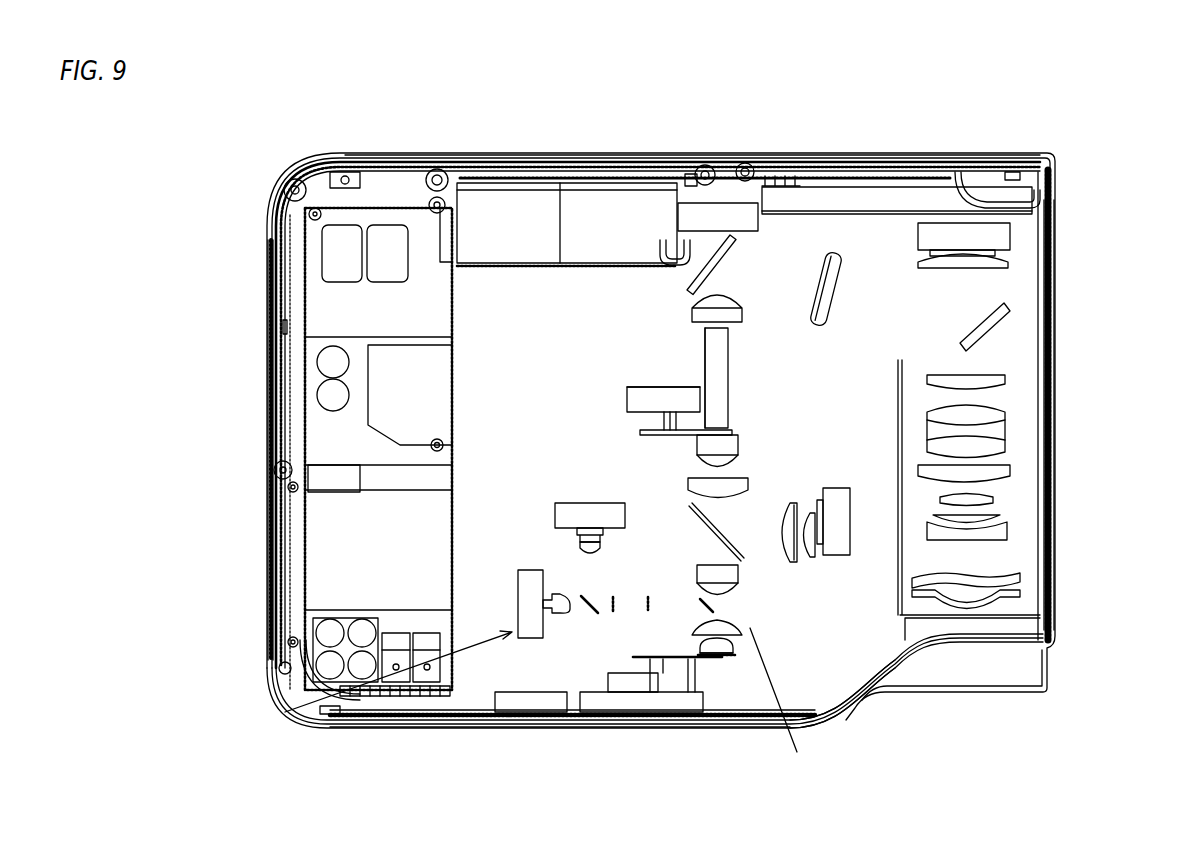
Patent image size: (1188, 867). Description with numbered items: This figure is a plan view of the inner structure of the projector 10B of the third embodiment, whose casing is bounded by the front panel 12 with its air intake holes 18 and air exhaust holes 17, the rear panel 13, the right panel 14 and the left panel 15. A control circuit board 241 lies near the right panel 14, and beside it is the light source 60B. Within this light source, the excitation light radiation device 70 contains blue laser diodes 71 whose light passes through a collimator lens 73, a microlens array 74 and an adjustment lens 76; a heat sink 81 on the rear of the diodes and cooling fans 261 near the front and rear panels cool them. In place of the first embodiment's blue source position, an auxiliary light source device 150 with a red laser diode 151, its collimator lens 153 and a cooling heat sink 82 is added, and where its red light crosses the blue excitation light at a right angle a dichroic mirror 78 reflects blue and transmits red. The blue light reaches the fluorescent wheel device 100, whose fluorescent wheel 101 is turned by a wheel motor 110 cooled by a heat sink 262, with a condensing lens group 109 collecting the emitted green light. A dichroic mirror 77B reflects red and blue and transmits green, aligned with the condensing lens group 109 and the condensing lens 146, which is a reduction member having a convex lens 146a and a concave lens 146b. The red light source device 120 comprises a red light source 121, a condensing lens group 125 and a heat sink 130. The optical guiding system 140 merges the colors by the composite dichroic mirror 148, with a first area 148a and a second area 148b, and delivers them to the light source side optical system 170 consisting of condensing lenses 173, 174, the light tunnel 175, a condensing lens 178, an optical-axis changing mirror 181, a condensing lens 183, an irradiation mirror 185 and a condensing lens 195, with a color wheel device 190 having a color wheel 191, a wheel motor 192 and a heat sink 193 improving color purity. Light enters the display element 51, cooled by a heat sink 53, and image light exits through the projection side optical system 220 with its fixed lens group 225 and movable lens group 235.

The projector 10B is at (1063, 139).
The front panel 12 is at (352, 730).
The rear panel 13 is at (552, 163).
The right panel 14 is at (268, 328).
The left panel 15 is at (1053, 578).
The air exhaust holes 17 is at (268, 360).
The air intake holes 18 is at (518, 158).
The display element 51 is at (995, 250).
The heat sink 53 is at (931, 195).
The light source 60B is at (527, 405).
The excitation light radiation device 70 is at (470, 497).
The blue laser diodes 71 is at (580, 537).
The collimator lens 73 is at (586, 543).
The microlens array 74 is at (612, 613).
The adjustment lens 76 is at (648, 597).
The dichroic mirror 77B is at (694, 613).
The dichroic mirror 78 is at (590, 610).
The heat sink 81 is at (590, 512).
The heat sink 82 is at (465, 620).
The fluorescent wheel device 100 is at (708, 672).
The fluorescent wheel 101 is at (650, 665).
The condensing lens group 109 is at (732, 665).
The wheel motor 110 is at (678, 673).
The red light source device 120 is at (832, 570).
The red light source 121 is at (828, 520).
The condensing lens group 125 is at (811, 570).
The heat sink 130 is at (843, 545).
The optical guiding system 140 is at (750, 628).
The condensing lens 146 is at (705, 572).
The convex lens 146a is at (727, 590).
The concave lens 146b is at (730, 568).
The composite dichroic mirror 148 is at (740, 553).
The first area 148a is at (718, 530).
The second area 148b is at (684, 498).
The auxiliary light source device 150 is at (320, 713).
The red laser diode 151 is at (528, 603).
The collimator lens 153 is at (558, 612).
The light source side optical system 170 is at (735, 240).
The condensing lens 173 is at (745, 482).
The condensing lens 174 is at (730, 447).
The light tunnel 175 is at (722, 380).
The condensing lens 178 is at (700, 315).
The optical-axis changing mirror 181 is at (700, 292).
The condensing lens 183 is at (835, 285).
The irradiation mirror 185 is at (995, 327).
The color wheel device 190 is at (628, 426).
The color wheel 191 is at (648, 437).
The wheel motor 192 is at (668, 418).
The heat sink 193 is at (640, 398).
The condensing lens 195 is at (1000, 265).
The projection side optical system 220 is at (1012, 443).
The fixed lens group 225 is at (998, 606).
The movable lens group 235 is at (1012, 400).
The control circuit board 241 is at (383, 578).
The cooling fans 261 is at (475, 215).
The heat sink 262 is at (637, 683).